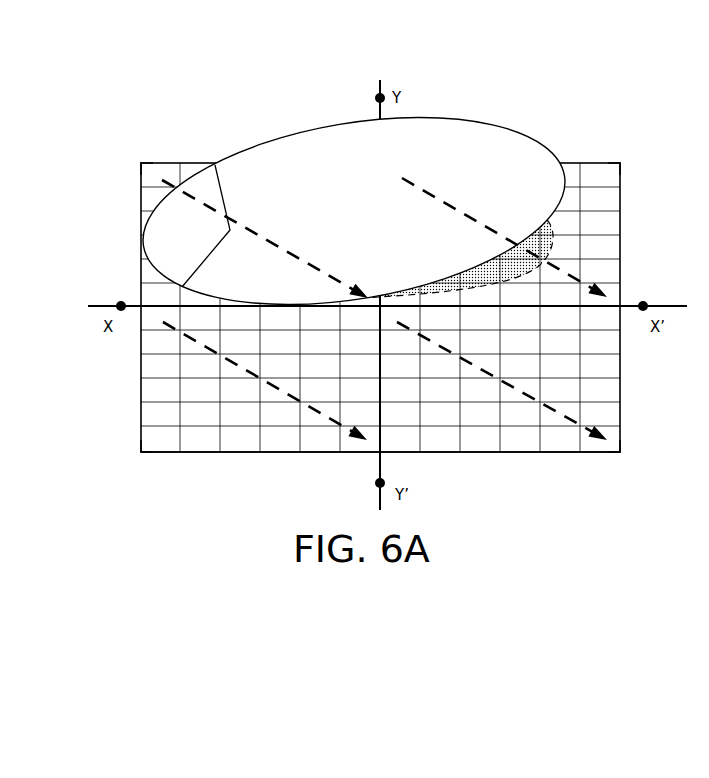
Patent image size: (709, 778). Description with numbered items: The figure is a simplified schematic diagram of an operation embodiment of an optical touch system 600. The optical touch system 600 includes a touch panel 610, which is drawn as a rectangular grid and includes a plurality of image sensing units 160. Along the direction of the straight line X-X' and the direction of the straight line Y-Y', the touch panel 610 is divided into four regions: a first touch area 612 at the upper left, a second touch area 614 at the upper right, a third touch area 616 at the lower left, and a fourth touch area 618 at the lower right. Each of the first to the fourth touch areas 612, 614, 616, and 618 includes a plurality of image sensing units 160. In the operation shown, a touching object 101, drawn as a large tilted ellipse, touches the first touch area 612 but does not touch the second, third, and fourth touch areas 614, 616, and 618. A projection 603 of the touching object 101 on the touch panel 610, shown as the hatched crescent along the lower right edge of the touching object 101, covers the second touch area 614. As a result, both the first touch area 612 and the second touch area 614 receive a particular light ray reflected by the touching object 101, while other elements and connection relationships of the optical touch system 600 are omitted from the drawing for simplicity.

The optical touch system 600 is at (156, 49).
The touching object 101 is at (470, 119).
The projection 603 is at (545, 238).
The image sensing units 160 is at (603, 397).
The touch panel 610 is at (482, 453).
The first touch area 612 is at (142, 163).
The second touch area 614 is at (620, 163).
The third touch area 616 is at (141, 452).
The fourth touch area 618 is at (620, 453).